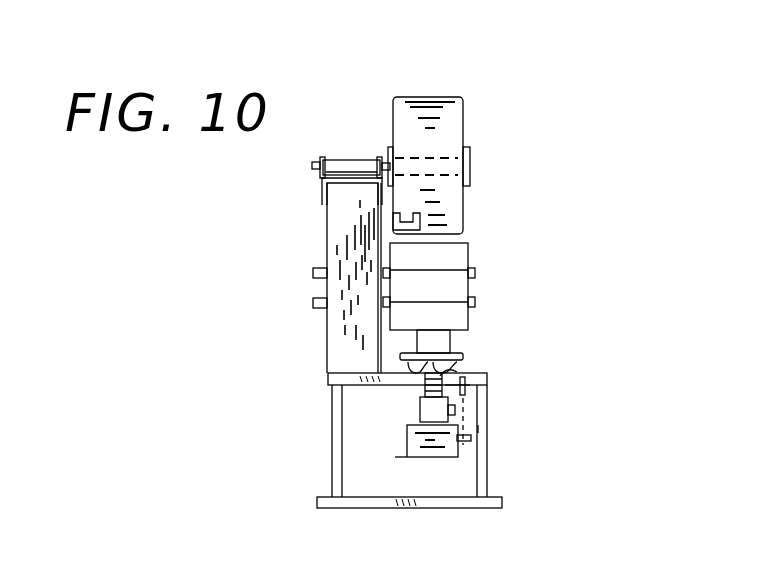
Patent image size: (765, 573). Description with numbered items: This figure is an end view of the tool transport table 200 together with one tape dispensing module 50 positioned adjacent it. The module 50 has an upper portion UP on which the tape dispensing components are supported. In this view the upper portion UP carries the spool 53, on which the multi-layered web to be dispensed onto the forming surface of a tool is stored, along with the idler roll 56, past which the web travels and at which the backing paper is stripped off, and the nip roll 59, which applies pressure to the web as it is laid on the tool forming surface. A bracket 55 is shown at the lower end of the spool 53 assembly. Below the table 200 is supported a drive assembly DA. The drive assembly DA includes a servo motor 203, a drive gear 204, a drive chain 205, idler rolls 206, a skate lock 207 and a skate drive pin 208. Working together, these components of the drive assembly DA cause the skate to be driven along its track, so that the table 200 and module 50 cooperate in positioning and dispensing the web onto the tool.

The spool 53 is at (408, 97).
The bracket 55 is at (393, 228).
The idler roll 56 is at (470, 248).
The nip roll 59 is at (470, 320).
The upper portion UP is at (345, 320).
The tool transport table 200 is at (313, 423).
The module 50 is at (452, 518).
The skate lock 207 is at (462, 373).
The skate drive pin 208 is at (455, 372).
The drive gear 204 is at (423, 385).
The drive chain 205 is at (467, 408).
The idler rolls 206 is at (437, 417).
The servo motor 203 is at (395, 458).
The drive assembly DA is at (478, 429).